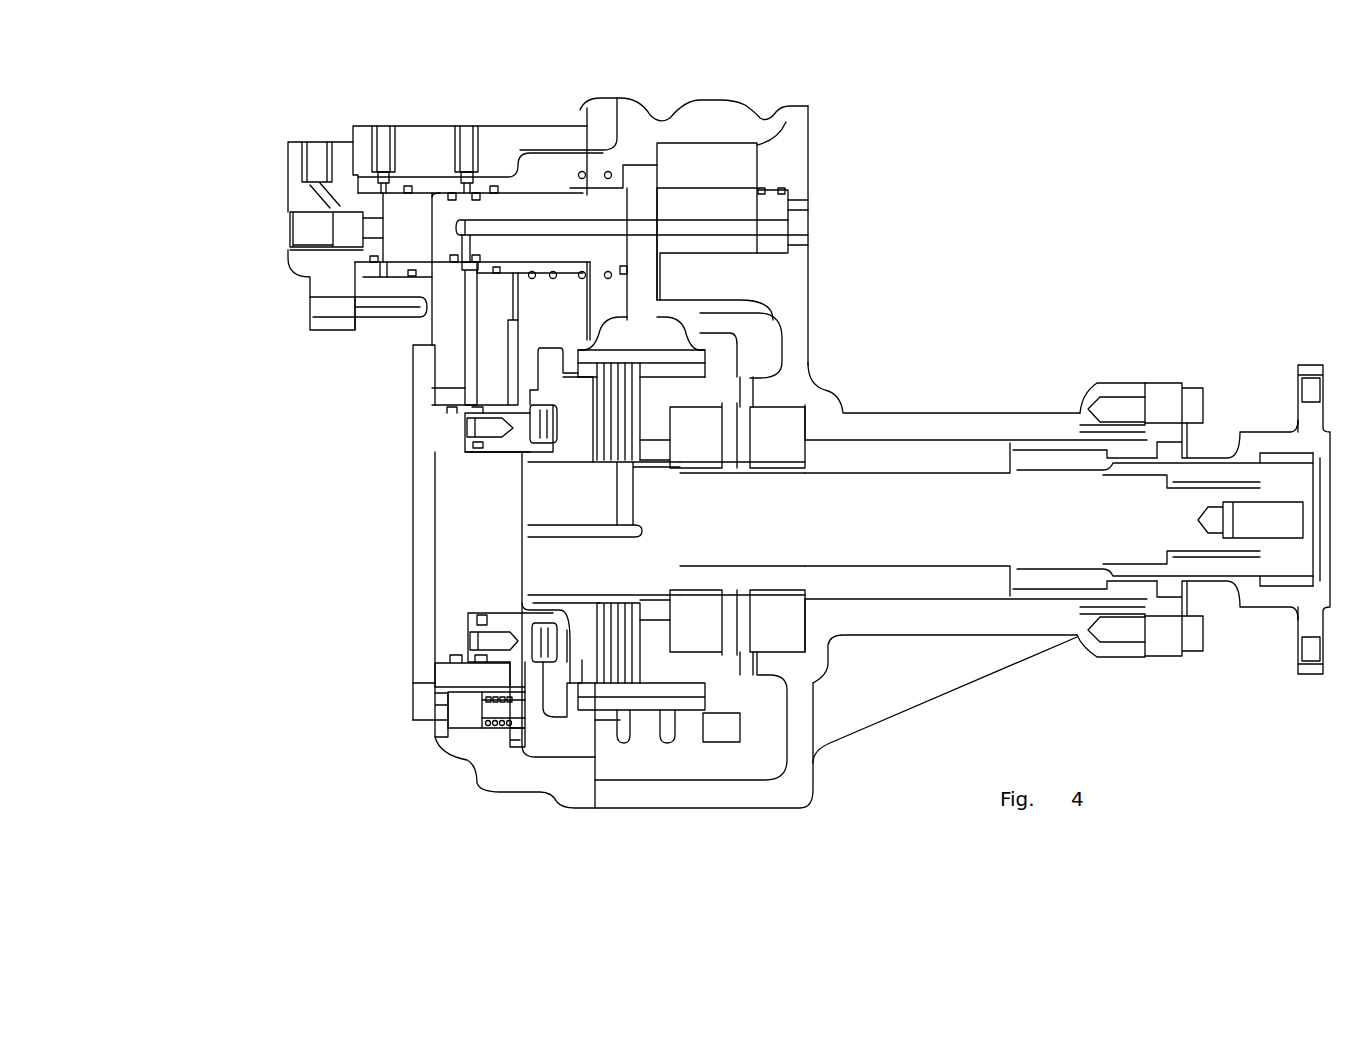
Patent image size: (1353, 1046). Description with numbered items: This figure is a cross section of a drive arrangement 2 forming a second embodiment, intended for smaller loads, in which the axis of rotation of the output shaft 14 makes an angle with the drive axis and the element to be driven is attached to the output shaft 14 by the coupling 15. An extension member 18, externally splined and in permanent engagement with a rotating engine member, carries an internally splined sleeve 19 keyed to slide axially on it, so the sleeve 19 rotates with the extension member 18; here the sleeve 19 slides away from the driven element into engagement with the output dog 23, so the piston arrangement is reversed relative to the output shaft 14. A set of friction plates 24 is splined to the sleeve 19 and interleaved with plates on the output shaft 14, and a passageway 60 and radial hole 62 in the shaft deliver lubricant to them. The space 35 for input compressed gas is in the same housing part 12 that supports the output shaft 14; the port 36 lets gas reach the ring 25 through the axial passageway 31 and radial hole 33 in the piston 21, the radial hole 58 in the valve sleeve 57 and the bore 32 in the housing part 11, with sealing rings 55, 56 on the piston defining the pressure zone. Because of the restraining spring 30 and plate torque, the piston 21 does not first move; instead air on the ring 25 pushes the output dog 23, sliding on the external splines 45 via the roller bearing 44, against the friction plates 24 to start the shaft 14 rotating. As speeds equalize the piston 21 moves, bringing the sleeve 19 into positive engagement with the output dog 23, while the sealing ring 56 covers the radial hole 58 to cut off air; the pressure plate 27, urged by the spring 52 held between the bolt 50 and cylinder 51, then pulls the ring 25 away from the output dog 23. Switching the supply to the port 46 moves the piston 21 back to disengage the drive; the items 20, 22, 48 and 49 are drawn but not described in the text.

The drive arrangement 2 is at (998, 290).
The housing part 11 is at (572, 795).
The housing part 12 is at (625, 812).
The output shaft 14 is at (1145, 557).
The coupling 15 is at (1305, 630).
The extension member 18 is at (724, 363).
The sleeve 19 is at (665, 343).
The lower piston plate 20 is at (650, 732).
The piston 21 is at (715, 200).
The piston stem 22 is at (645, 296).
The output dog 23 is at (500, 735).
The friction plates 24 is at (607, 690).
The ring 25 is at (490, 430).
The pressure plate 27 is at (508, 672).
The restraining spring 30 is at (555, 280).
The axial passageway 31 is at (745, 220).
The bore 32 is at (470, 390).
The radial hole 33 is at (458, 258).
The space 35 is at (790, 235).
The port 36 is at (795, 205).
The roller bearing 44 is at (565, 462).
The external splines 45 is at (582, 477).
The port 46 is at (385, 140).
The solenoid valve 48 is at (315, 150).
The flow direction 49 is at (288, 236).
The bolt 50 is at (455, 725).
The cylinder 51 is at (508, 758).
The spring 52 is at (462, 730).
The sealing ring 55 is at (452, 190).
The sealing ring 56 is at (478, 190).
The valve sleeve 57 is at (355, 200).
The radial hole 58 is at (467, 265).
The passageway 60 is at (550, 535).
The radial hole 62 is at (625, 500).